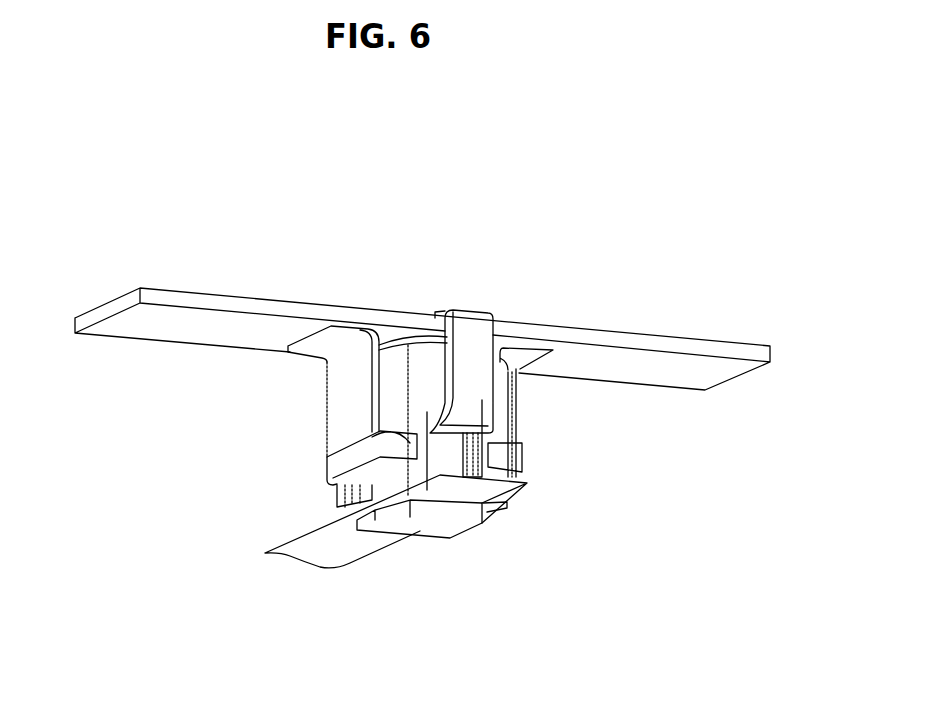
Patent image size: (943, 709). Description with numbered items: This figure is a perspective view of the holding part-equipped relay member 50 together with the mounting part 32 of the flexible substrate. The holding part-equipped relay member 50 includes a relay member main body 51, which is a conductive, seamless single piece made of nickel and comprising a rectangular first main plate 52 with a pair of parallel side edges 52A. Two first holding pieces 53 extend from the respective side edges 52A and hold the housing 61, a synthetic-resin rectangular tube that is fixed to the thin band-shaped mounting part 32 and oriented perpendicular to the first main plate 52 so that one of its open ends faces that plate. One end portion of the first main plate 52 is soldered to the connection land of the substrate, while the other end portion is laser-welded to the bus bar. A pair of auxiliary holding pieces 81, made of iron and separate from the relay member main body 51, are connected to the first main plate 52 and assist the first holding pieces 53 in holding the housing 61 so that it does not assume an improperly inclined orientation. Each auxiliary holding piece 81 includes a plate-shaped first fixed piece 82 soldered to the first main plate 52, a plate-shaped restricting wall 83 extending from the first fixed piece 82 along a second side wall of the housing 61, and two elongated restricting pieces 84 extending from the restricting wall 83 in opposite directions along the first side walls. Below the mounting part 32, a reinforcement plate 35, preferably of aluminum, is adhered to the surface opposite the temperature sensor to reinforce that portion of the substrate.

The holding part-equipped relay member 50 is at (452, 212).
The relay member main body 51 is at (684, 298).
The first main plate 52 is at (677, 374).
The side edges 52A is at (240, 290).
The first holding pieces 53 is at (478, 345).
The housing 61 is at (500, 414).
The auxiliary holding pieces 81 is at (216, 395).
The first fixed piece 82 is at (327, 353).
The restricting wall 83 is at (340, 408).
The restricting pieces 84 is at (325, 460).
The mounting part 32 is at (333, 550).
The reinforcement plate 35 is at (437, 528).